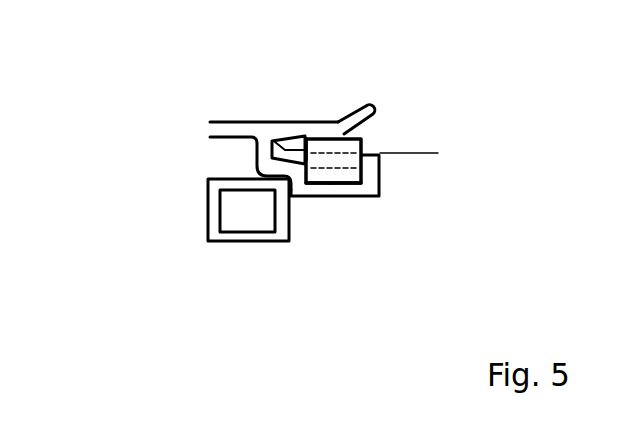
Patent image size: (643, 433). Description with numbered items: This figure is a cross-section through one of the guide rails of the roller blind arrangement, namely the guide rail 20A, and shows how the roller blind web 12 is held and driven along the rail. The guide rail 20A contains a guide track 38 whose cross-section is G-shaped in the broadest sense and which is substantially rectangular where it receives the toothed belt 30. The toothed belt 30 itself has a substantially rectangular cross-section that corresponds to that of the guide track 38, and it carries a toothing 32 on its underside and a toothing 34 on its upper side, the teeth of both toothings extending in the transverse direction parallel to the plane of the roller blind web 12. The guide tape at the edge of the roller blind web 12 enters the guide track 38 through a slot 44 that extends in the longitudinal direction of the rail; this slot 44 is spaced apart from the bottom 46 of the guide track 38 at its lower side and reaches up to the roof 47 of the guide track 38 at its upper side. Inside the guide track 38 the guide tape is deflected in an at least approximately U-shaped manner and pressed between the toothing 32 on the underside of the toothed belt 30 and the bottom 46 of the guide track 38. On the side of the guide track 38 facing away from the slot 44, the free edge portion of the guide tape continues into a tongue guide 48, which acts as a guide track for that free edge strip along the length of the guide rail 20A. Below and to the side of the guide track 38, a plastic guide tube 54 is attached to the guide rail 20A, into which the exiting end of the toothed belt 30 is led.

The roller blind web 12 is at (422, 153).
The guide rail 20A is at (208, 130).
The toothed belt 30 is at (311, 158).
The toothing 32 is at (343, 173).
The toothing 34 is at (342, 148).
The guide track 38 is at (313, 187).
The slot 44 is at (375, 131).
The bottom 46 is at (329, 186).
The roof 47 is at (311, 148).
The tongue guide 48 is at (277, 144).
The guide tube 54 is at (227, 233).